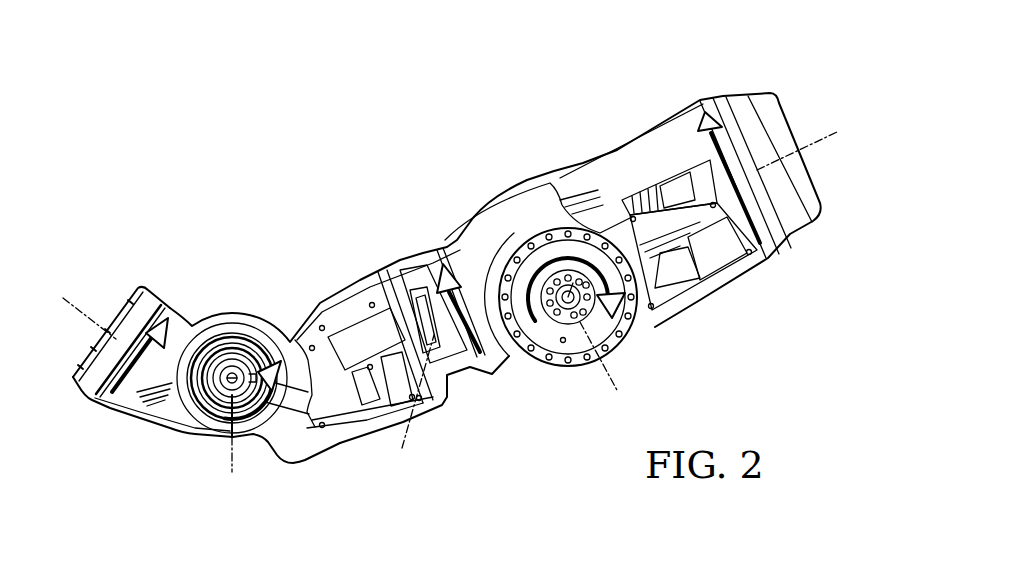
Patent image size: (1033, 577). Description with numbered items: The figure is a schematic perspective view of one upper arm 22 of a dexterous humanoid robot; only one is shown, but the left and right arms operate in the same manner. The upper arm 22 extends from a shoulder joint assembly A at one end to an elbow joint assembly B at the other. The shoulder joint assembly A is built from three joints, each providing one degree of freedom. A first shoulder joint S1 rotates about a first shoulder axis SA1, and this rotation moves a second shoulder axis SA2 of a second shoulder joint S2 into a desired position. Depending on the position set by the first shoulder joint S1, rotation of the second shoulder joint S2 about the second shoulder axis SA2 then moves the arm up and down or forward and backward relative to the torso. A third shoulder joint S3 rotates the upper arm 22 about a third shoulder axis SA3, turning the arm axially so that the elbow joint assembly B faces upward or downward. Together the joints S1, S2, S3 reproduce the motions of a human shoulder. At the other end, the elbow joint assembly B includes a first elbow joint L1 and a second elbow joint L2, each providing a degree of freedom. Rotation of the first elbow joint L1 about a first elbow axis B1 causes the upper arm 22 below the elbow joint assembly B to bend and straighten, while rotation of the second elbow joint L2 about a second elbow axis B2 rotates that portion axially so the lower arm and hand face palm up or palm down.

The upper arm 22 is at (356, 198).
The shoulder joint assembly A is at (476, 146).
The elbow joint assembly B is at (180, 448).
The first elbow joint L1 is at (232, 298).
The second elbow joint L2 is at (91, 418).
The first elbow axis B1 is at (233, 461).
The second elbow axis B2 is at (78, 306).
The first shoulder joint S1 is at (711, 80).
The second shoulder joint S2 is at (646, 340).
The third shoulder joint S3 is at (498, 379).
The first shoulder axis SA1 is at (805, 143).
The second shoulder axis SA2 is at (611, 374).
The third shoulder axis SA3 is at (409, 406).